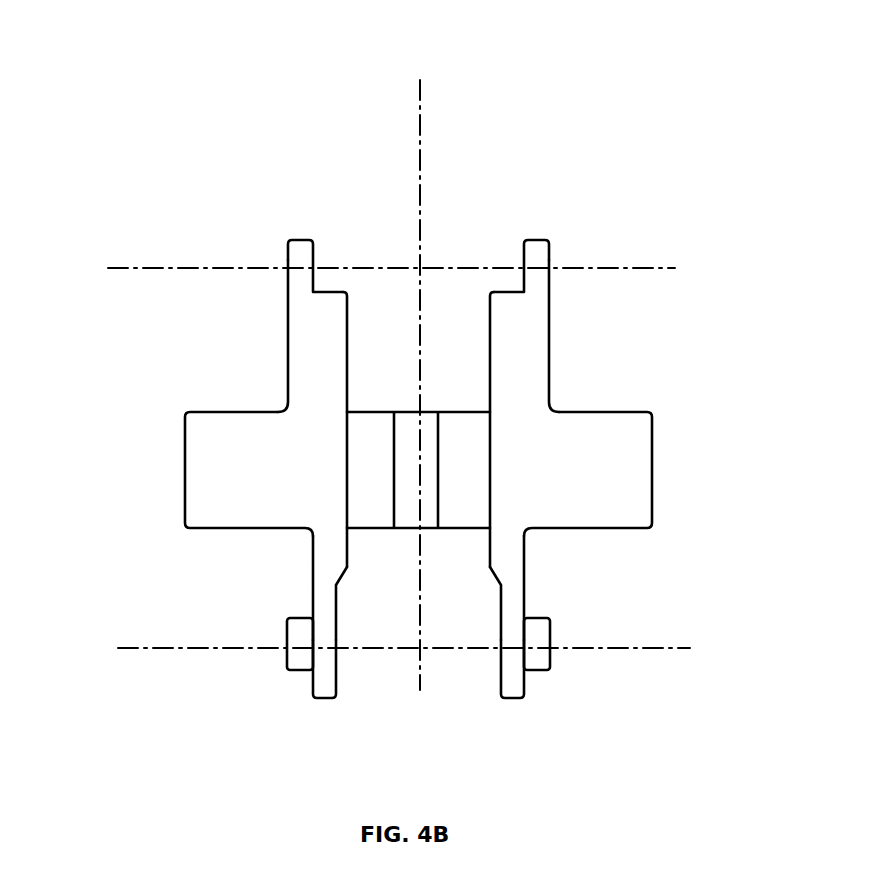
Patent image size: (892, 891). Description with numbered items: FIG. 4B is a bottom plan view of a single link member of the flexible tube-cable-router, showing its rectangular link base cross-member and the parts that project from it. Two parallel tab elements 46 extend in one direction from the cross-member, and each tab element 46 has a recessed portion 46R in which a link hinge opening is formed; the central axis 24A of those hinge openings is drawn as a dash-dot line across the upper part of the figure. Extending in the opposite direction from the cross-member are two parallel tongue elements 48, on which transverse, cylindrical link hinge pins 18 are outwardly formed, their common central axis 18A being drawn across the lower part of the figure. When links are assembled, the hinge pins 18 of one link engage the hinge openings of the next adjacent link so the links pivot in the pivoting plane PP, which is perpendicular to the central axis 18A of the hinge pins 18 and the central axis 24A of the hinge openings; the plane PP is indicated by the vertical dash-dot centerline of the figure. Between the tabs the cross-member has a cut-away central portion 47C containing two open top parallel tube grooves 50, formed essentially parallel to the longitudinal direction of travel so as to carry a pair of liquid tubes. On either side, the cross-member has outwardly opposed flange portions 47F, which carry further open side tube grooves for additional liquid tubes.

The pivoting plane PP is at (423, 368).
The central axis of hinge openings 24A is at (393, 270).
The central axis of hinge pins 18A is at (404, 650).
The recessed portion 46R is at (328, 268).
The tab element 46 is at (288, 372).
The flange portion 47F is at (185, 493).
The cut-away central portion 47C is at (374, 394).
The open top parallel tube groove 50 is at (358, 498).
The tongue element 48 is at (500, 663).
The link hinge pin 18 is at (283, 658).